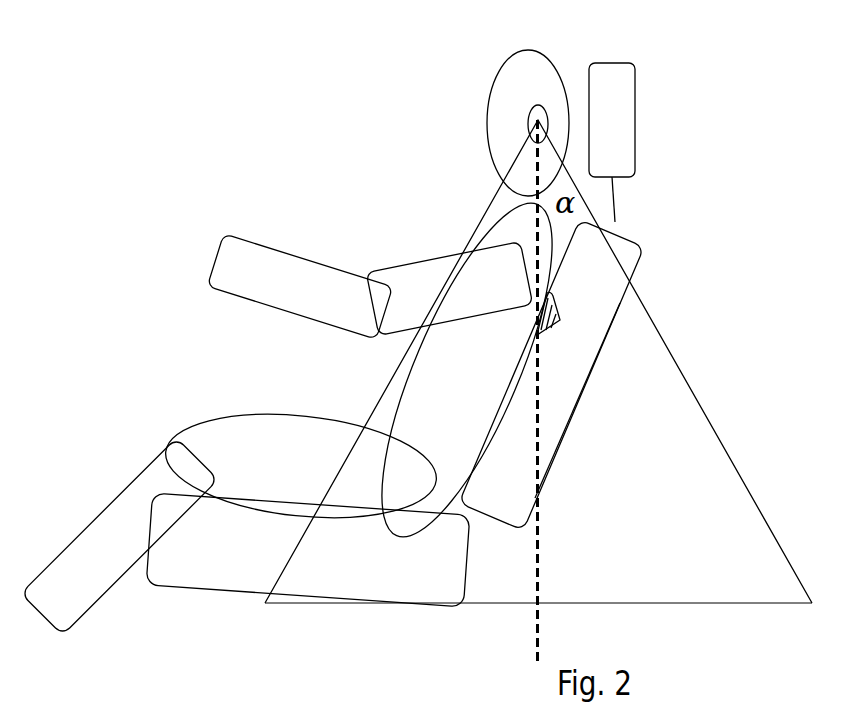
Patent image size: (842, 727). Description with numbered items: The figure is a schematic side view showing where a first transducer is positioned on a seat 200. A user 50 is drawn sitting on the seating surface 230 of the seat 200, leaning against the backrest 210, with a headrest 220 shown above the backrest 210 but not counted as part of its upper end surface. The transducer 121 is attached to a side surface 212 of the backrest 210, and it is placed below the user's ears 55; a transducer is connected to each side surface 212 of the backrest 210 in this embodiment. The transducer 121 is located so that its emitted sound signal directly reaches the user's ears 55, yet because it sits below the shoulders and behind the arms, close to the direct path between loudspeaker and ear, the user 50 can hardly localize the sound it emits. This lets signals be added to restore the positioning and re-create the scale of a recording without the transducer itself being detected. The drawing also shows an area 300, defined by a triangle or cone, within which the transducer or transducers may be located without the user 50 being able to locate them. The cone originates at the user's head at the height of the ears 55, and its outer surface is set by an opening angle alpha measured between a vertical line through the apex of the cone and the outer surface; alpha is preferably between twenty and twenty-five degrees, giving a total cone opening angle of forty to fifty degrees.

The user 50 is at (330, 121).
The user's ears 55 is at (523, 63).
The transducer 121 is at (562, 317).
The seat 200 is at (672, 243).
The backrest 210 is at (590, 393).
The side surface 212 is at (553, 443).
The headrest 220 is at (630, 63).
The seating surface 230 is at (225, 525).
The area 300 is at (748, 502).